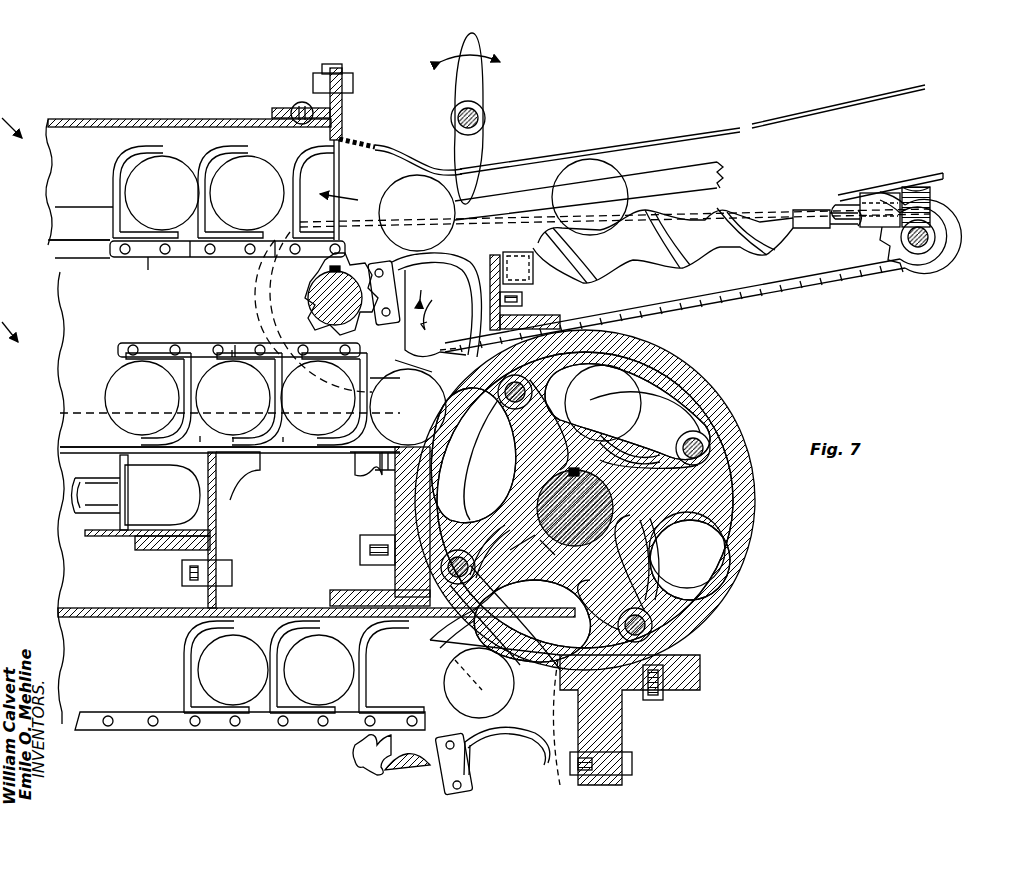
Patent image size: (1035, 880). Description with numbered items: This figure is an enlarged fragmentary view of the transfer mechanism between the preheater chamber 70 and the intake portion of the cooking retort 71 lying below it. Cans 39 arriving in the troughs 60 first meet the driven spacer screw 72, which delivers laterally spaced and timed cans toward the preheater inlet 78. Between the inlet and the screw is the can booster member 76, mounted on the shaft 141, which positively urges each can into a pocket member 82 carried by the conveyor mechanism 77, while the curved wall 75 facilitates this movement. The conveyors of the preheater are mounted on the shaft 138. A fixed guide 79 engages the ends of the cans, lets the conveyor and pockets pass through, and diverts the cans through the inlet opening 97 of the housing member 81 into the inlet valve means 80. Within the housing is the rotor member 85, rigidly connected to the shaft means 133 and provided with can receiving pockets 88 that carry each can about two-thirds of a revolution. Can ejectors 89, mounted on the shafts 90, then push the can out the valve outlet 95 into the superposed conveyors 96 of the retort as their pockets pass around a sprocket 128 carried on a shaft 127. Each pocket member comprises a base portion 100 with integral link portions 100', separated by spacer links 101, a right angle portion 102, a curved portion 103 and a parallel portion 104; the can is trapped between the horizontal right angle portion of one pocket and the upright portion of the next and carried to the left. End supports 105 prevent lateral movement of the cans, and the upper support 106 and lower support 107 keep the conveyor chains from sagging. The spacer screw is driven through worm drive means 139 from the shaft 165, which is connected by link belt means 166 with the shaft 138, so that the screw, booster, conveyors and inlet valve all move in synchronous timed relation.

The cans 39 is at (172, 178).
The troughs 60 is at (925, 170).
The preheater chamber 70 is at (92, 123).
The cooking retort 71 is at (125, 620).
The spacer screw 72 is at (692, 250).
The curved wall 75 is at (378, 146).
The can booster member 76 is at (480, 86).
The conveyor mechanism 77 is at (135, 262).
The preheater inlet 78 is at (347, 176).
The fixed guide 79 is at (480, 345).
The inlet valve means 80 is at (716, 386).
The housing member 81 is at (705, 412).
The pocket members 82 is at (112, 182).
The rotor member 85 is at (695, 492).
The can receiving pockets 88 is at (660, 390).
The can ejectors 89 is at (615, 440).
The shafts 90 is at (462, 552).
The valve outlet 95 is at (445, 640).
The conveyors 96 is at (158, 731).
The inlet opening 97 is at (452, 392).
The base portion 100 is at (370, 569).
The link portions 100' is at (349, 528).
The spacer links 101 is at (190, 262).
The right angle portion 102 is at (275, 402).
The curved portion 103 is at (340, 412).
The parallel portion 104 is at (240, 420).
The end supports 105 is at (58, 227).
The upper support 106 is at (60, 250).
The lower support 107 is at (46, 446).
The shafts 127 is at (392, 770).
The sprockets 128 is at (355, 755).
The shaft means 133 is at (560, 552).
The shaft 138 is at (315, 298).
The worm drive means 139 is at (915, 212).
The shaft 141 is at (486, 118).
The shaft 165 is at (928, 232).
The link belt means 166 is at (820, 285).